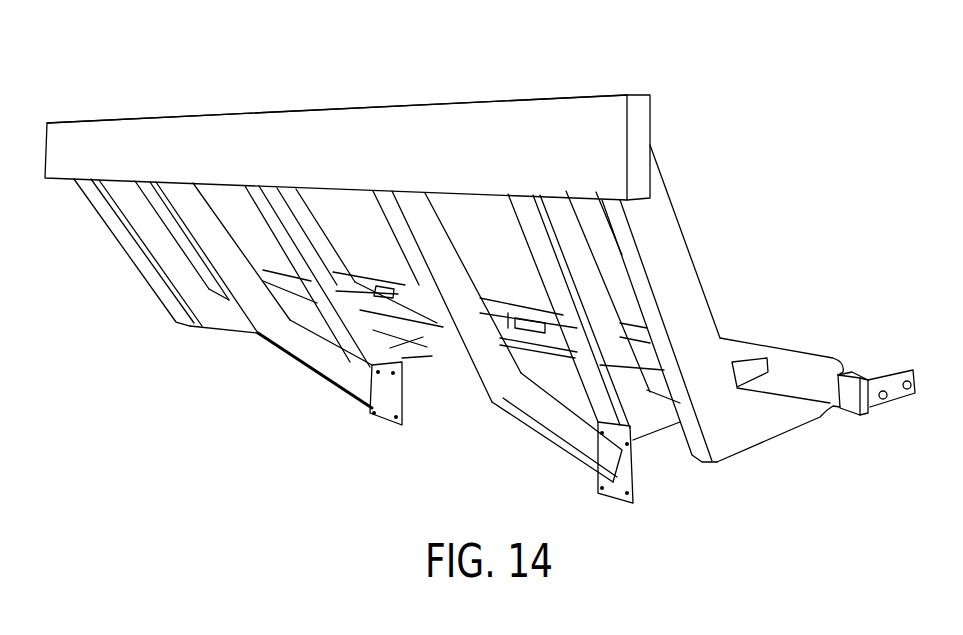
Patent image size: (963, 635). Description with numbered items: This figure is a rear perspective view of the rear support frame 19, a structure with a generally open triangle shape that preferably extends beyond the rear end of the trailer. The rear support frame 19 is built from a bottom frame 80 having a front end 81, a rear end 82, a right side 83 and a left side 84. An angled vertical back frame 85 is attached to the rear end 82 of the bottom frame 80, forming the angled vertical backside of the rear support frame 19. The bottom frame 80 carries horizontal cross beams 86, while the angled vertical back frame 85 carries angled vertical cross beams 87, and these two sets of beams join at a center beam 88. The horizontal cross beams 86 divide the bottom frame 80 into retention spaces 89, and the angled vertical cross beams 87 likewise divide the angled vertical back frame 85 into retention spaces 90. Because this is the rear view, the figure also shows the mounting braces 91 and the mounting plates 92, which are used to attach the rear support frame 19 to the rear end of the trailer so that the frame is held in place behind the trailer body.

The rear support frame 19 is at (299, 92).
The angled vertical back frame 85 is at (346, 107).
The angled vertical cross beams 87 is at (110, 226).
The retention spaces 90 is at (229, 214).
The rear end 82 is at (462, 368).
The mounting braces 91 is at (303, 360).
The mounting plates 92 is at (402, 398).
The right side 83 is at (136, 298).
The retention spaces 89 is at (528, 338).
The horizontal cross beams 86 is at (387, 298).
The center beam 88 is at (423, 335).
The bottom frame 80 is at (746, 346).
The front end 81 is at (818, 350).
The left side 84 is at (832, 428).